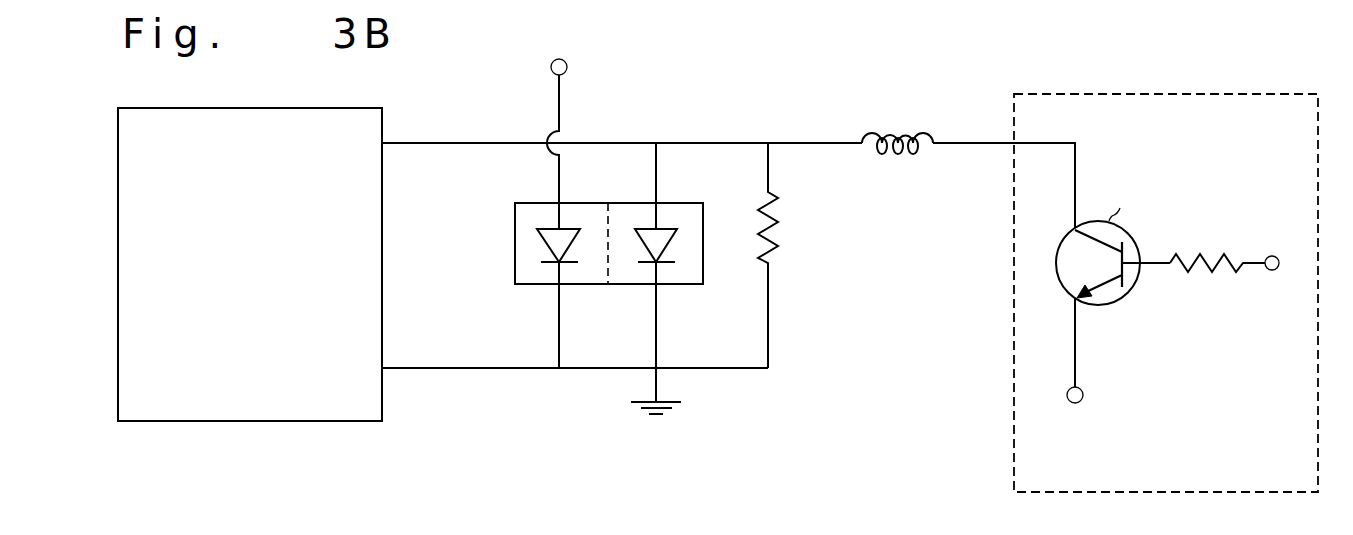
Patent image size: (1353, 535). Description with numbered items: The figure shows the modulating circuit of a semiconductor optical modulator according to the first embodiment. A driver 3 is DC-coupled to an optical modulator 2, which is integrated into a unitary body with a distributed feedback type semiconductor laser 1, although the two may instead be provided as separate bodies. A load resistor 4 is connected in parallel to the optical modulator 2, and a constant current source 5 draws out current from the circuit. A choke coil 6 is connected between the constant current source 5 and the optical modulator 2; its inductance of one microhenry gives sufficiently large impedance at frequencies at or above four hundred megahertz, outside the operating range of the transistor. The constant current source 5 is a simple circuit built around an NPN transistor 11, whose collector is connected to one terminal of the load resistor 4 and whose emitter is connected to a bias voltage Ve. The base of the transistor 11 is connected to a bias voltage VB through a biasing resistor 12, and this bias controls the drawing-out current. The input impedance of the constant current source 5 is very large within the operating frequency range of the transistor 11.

The semiconductor laser 1 is at (569, 201).
The optical modulator 2 is at (665, 201).
The driver 3 is at (225, 423).
The load resistor 4 is at (775, 236).
The constant current source 5 is at (1205, 493).
The choke coil 6 is at (895, 125).
The transistor 11 is at (1140, 237).
The biasing resistor 12 is at (1218, 250).